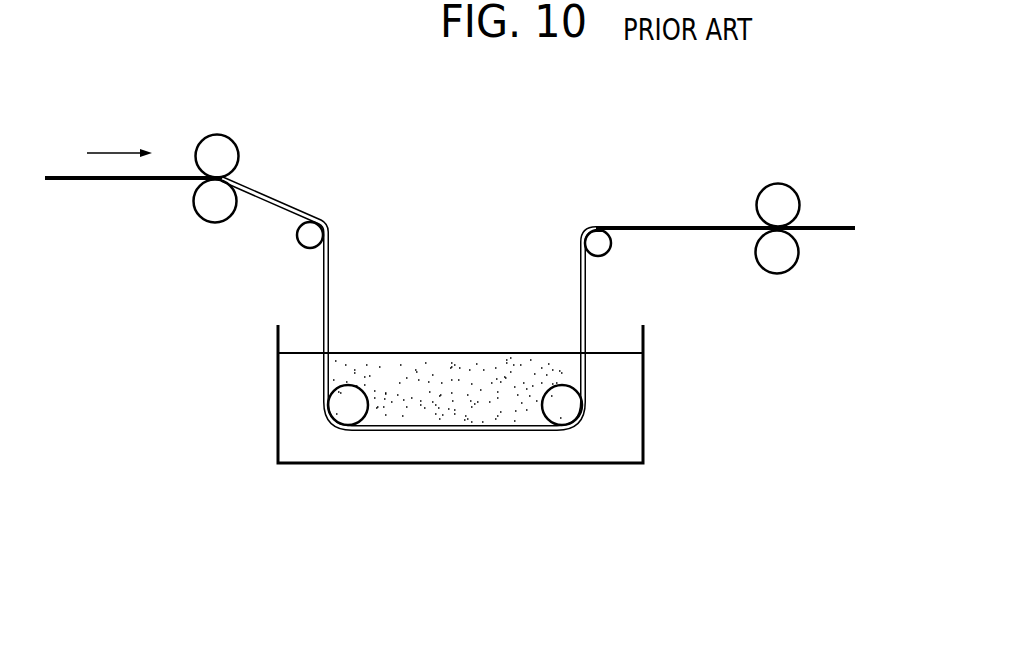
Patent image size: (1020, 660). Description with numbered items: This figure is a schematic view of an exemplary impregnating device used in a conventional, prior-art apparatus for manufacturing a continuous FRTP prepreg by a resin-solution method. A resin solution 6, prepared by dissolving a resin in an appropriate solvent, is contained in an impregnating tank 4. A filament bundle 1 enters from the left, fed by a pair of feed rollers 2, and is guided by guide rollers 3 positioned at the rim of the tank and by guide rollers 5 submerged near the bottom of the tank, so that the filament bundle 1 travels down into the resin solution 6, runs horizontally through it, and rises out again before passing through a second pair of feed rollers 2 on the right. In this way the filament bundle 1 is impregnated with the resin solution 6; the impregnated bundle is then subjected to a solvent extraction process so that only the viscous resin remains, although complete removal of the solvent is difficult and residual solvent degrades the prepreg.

The filament bundle 1 is at (329, 291).
The feed rollers 2 is at (243, 170).
The guide rollers 3 is at (310, 234).
The impregnating tank 4 is at (643, 437).
The guide rollers 5 is at (350, 415).
The resin solution 6 is at (644, 381).